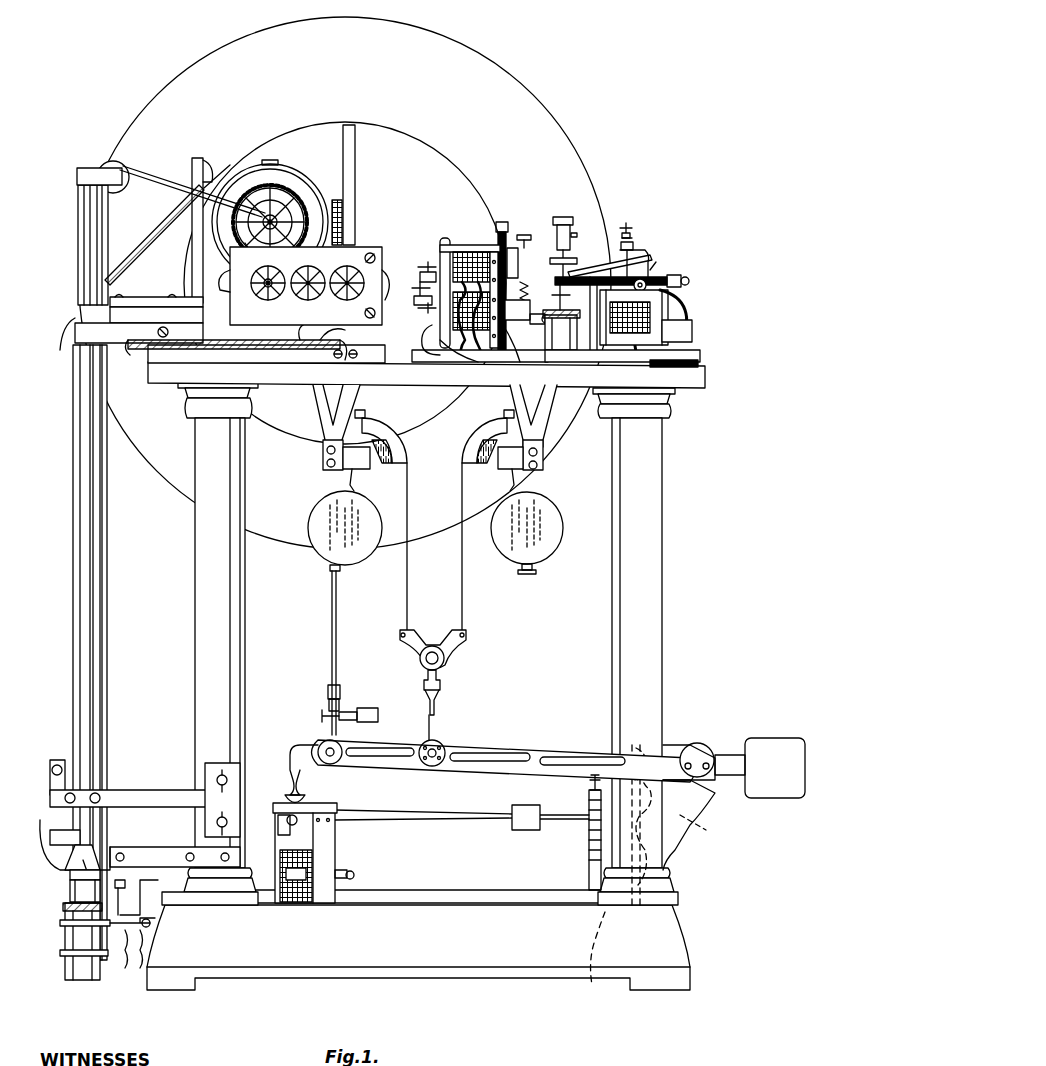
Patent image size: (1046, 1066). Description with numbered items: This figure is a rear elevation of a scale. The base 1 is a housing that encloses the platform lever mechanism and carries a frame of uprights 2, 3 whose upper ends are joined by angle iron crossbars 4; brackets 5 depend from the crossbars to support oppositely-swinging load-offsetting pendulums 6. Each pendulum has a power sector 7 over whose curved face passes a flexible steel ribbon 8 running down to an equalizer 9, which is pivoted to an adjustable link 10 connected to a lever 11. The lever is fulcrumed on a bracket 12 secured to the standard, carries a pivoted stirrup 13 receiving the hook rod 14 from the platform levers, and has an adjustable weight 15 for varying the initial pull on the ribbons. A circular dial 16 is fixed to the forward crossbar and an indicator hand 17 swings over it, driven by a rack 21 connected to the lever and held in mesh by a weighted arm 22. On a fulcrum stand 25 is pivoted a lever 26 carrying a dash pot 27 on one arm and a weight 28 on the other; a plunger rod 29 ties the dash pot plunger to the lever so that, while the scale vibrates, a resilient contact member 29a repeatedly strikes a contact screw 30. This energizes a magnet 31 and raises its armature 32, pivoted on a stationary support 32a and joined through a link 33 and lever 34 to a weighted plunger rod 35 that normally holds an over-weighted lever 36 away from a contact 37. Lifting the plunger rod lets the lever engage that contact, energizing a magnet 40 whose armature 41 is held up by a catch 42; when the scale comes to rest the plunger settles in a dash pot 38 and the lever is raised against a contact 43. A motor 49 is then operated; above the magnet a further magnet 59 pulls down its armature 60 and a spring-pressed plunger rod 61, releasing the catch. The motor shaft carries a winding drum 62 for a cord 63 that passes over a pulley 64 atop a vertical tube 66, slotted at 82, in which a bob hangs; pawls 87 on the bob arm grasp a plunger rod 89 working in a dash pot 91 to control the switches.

The base 1 is at (670, 930).
The upright 2 is at (663, 634).
The upright 3 is at (195, 598).
The angle iron crossbar 4 is at (705, 377).
The bracket 5 is at (313, 395).
The load-offsetting pendulum 6 is at (312, 513).
The power sector 7 is at (395, 440).
The flexible steel band or ribbon 8 is at (462, 568).
The equalizer 9 is at (446, 642).
The adjustable link 10 is at (440, 692).
The lever 11 is at (530, 745).
The bracket 12 is at (700, 808).
The pivoted stirrup 13 is at (690, 835).
The hook rod 14 is at (590, 987).
The adjustable weight 15 is at (778, 740).
The circular dial 16 is at (548, 100).
The indicator hand 17 is at (356, 157).
The rack 21 is at (338, 632).
The weighted arm 22 is at (367, 700).
The fulcrum stand 25 is at (330, 858).
The lever 26 is at (440, 818).
The dash pot 27 is at (290, 850).
The weight 28 is at (522, 805).
The plunger rod 29 is at (302, 778).
The resilient contact member 29a is at (580, 800).
The contact screw 30 is at (596, 790).
The magnet 31 is at (662, 318).
The armature 32 is at (700, 333).
The stationary support 32a is at (688, 326).
The link 33 is at (600, 290).
The lever 34 is at (584, 285).
The weighted plunger rod 35 is at (572, 245).
The over-weighted lever 36 is at (640, 252).
The contact 37 is at (646, 272).
The dash pot 38 is at (553, 330).
The magnet 40 is at (432, 318).
The pivoted armature 41 is at (478, 345).
The pivoted catch 42 is at (520, 340).
The contact 43 is at (630, 232).
The motor 49 is at (278, 168).
The magnet 59 is at (462, 255).
The armature 60 is at (488, 260).
The spring-pressed plunger rod 61 is at (520, 262).
The spool or winding drum 62 is at (240, 226).
The cord 63 is at (150, 165).
The pulley 64 is at (128, 190).
The vertical tube 66 is at (100, 683).
The slot 82 is at (90, 563).
The pivoted pawl 87 is at (98, 842).
The plunger rod 89 is at (70, 888).
The dash pot 91 is at (65, 968).